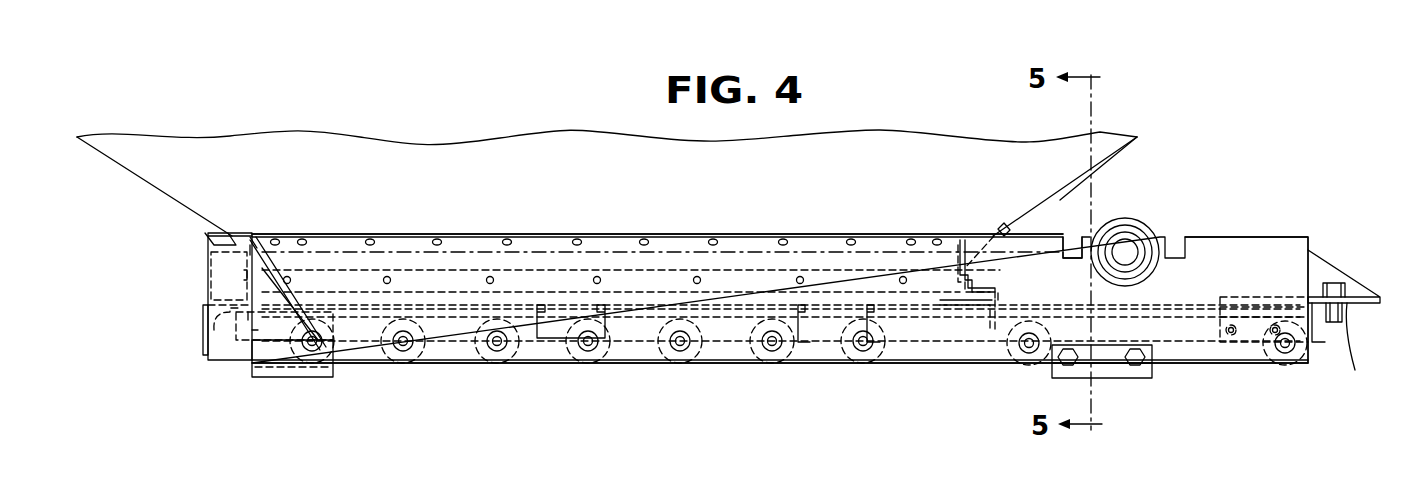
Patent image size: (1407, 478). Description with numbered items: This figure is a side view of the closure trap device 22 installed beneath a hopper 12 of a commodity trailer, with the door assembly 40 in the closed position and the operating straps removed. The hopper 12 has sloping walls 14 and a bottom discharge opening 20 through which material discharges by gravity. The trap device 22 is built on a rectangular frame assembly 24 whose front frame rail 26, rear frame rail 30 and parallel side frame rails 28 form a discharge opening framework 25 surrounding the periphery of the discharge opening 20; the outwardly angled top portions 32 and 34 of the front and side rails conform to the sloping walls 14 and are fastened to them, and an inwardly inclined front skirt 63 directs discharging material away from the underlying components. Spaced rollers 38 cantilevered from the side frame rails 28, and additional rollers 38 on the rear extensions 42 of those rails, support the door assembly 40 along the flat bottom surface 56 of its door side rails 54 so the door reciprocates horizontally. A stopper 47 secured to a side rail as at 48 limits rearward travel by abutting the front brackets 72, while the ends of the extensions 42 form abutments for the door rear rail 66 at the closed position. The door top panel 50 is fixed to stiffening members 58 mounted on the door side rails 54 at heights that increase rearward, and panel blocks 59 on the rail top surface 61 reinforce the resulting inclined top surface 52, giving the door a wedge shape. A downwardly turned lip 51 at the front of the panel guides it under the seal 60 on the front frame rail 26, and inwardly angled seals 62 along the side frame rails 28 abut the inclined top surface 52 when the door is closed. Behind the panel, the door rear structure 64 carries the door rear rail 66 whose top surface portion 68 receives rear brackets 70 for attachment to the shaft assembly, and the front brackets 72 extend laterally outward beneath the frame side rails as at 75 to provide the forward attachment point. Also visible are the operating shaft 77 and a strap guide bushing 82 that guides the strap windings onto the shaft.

The hopper 12 is at (1127, 153).
The sloping walls 14 is at (1115, 170).
The bottom discharge opening 20 is at (406, 137).
The closure trap device 22 is at (195, 305).
The frame assembly 24 is at (1298, 238).
The discharge opening framework 25 is at (344, 234).
The front frame rail 26 is at (222, 300).
The side frame rails 28 is at (950, 364).
The rear frame rail 30 is at (990, 290).
The outwardly angled top portion of front frame rail 32 is at (218, 240).
The outwardly angled top portion of side frame rails 34 is at (872, 238).
The rollers 38 is at (338, 352).
The door assembly 40 is at (901, 330).
The rear portions or extensions of frame side rails 42 is at (1240, 352).
The stopper 47 is at (1118, 372).
The stopper attachment location 48 is at (1158, 384).
The door top panel 50 is at (776, 292).
The downwardly turned lip 51 is at (215, 322).
The inclined top surface 52 is at (662, 300).
The door side rails 54 is at (522, 342).
The flat bottom surface 56 is at (447, 322).
The stiffening members 58 is at (556, 342).
The panel blocks 59 is at (1074, 300).
The seal 60 is at (963, 262).
The top surface of door side rails 61 is at (984, 318).
The side rail seals 62 is at (462, 286).
The front skirt 63 is at (262, 245).
The door rear structure 64 is at (1195, 316).
The door rear rail 66 is at (1318, 345).
The top surface portion of rear rail 68 is at (1347, 303).
The rear brackets 70 is at (1352, 296).
The front brackets 72 is at (268, 362).
The laterally outward extension of front bracket 75 is at (250, 366).
The shaft 77 is at (1125, 252).
The strap guide bushing 82 is at (1130, 228).